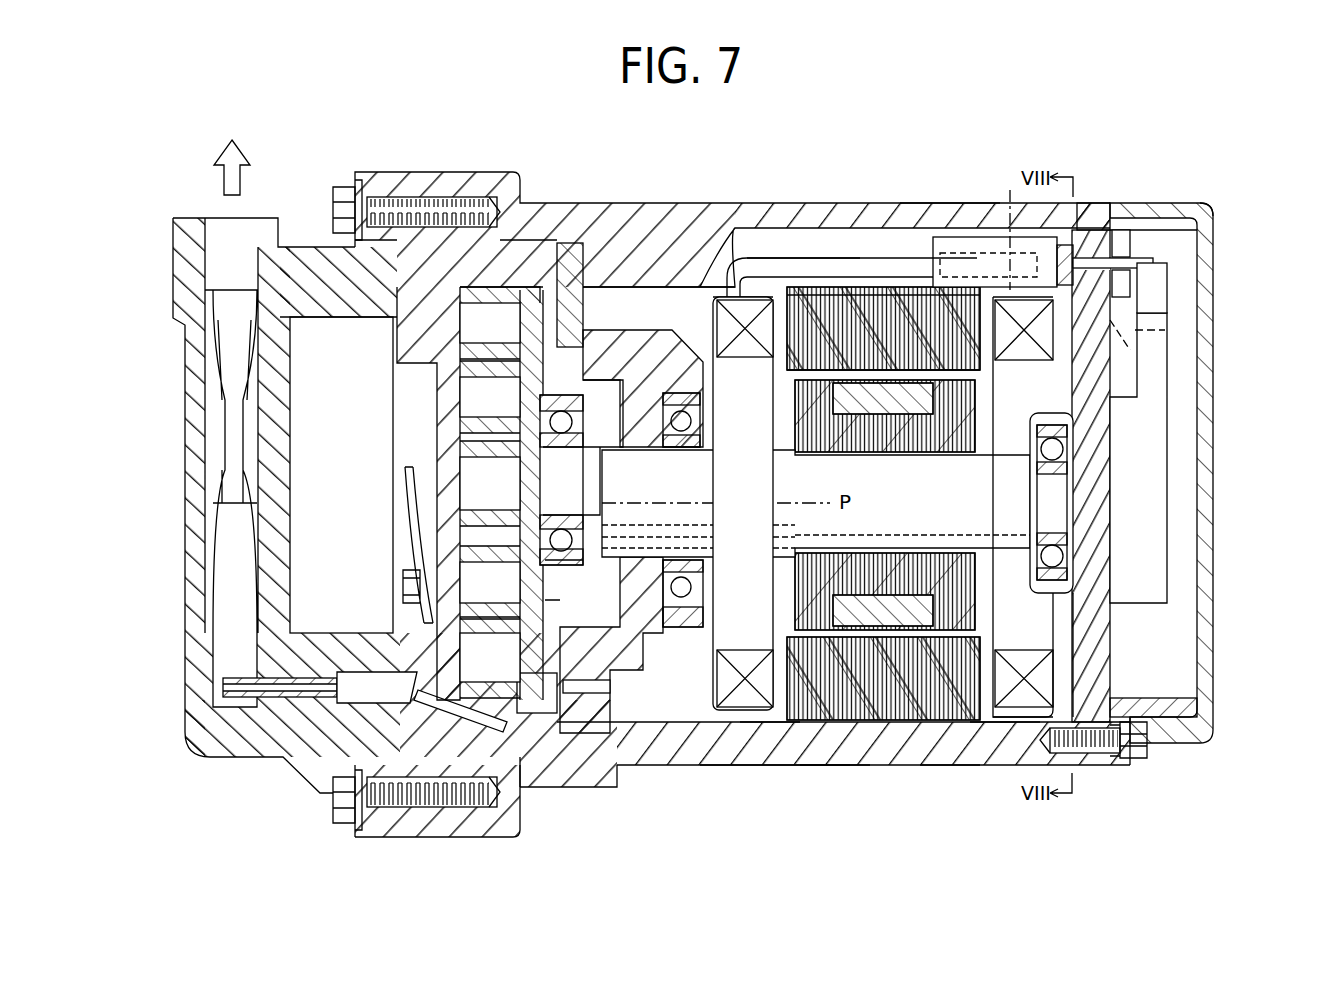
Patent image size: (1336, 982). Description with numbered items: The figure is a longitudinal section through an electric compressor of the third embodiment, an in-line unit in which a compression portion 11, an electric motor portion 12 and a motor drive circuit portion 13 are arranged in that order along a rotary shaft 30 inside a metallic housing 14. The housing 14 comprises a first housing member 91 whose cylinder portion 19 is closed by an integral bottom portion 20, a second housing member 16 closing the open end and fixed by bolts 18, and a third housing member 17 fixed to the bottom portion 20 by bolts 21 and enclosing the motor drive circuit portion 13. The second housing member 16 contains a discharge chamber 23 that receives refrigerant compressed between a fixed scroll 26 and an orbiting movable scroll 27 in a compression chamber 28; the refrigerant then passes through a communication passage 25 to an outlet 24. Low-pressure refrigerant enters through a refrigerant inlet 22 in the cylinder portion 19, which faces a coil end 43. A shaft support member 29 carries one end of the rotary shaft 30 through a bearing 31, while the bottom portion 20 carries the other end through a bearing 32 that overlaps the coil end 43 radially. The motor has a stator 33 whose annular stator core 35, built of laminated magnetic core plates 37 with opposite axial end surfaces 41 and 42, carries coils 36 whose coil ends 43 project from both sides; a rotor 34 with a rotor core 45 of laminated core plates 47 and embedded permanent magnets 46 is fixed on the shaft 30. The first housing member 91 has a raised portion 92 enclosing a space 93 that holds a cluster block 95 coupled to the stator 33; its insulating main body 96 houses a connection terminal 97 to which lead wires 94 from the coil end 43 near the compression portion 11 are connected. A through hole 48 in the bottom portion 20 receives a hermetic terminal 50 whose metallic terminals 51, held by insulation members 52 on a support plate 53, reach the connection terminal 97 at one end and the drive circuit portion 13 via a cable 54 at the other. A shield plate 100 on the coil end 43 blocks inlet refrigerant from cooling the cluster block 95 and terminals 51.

The compression portion 11 is at (617, 322).
The electric motor portion 12 is at (912, 740).
The motor drive circuit portion 13 is at (1192, 520).
The housing 14 is at (776, 780).
The second housing member 16 is at (245, 760).
The third housing member 17 is at (1212, 617).
The bolts 18 is at (333, 210).
The cylinder portion 19 is at (944, 745).
The bottom portion 20 is at (1087, 650).
The bolts 21 is at (1147, 748).
The refrigerant inlet 22 is at (1025, 420).
The discharge chamber 23 is at (360, 457).
The outlet 24 is at (222, 215).
The communication passage 25 is at (218, 290).
The fixed scroll 26 is at (398, 365).
The movable scroll 27 is at (520, 212).
The compression chamber 28 is at (502, 669).
The shaft support member 29 is at (640, 648).
The rotary shaft 30 is at (742, 447).
The bearing 31 is at (705, 440).
The bearing 32 is at (1078, 557).
The stator 33 is at (752, 285).
The rotor 34 is at (786, 590).
The stator core 35 is at (838, 290).
The coils 36 is at (1020, 715).
The magnetic core plates 37 is at (876, 290).
The axial end surface 41 is at (762, 722).
The axial end surface 42 is at (990, 722).
The coil ends 43 is at (715, 692).
The rotor core 45 is at (778, 440).
The permanent magnets 46 is at (897, 452).
The magnetic core plates 47 is at (870, 454).
The through hole 48 is at (1100, 243).
The hermetic terminal 50 is at (1160, 234).
The metallic terminal 51 is at (1140, 266).
The insulation member 52 is at (1208, 215).
The support plate 53 is at (1125, 295).
The cable 54 is at (1167, 290).
The first housing member 91 is at (829, 766).
The raised portion 92 is at (940, 208).
The space 93 is at (857, 247).
The lead wires 94 is at (803, 255).
The cluster block 95 is at (995, 250).
The main body 96 is at (978, 250).
The connection terminal 97 is at (1012, 223).
The shield plate 100 is at (1130, 345).